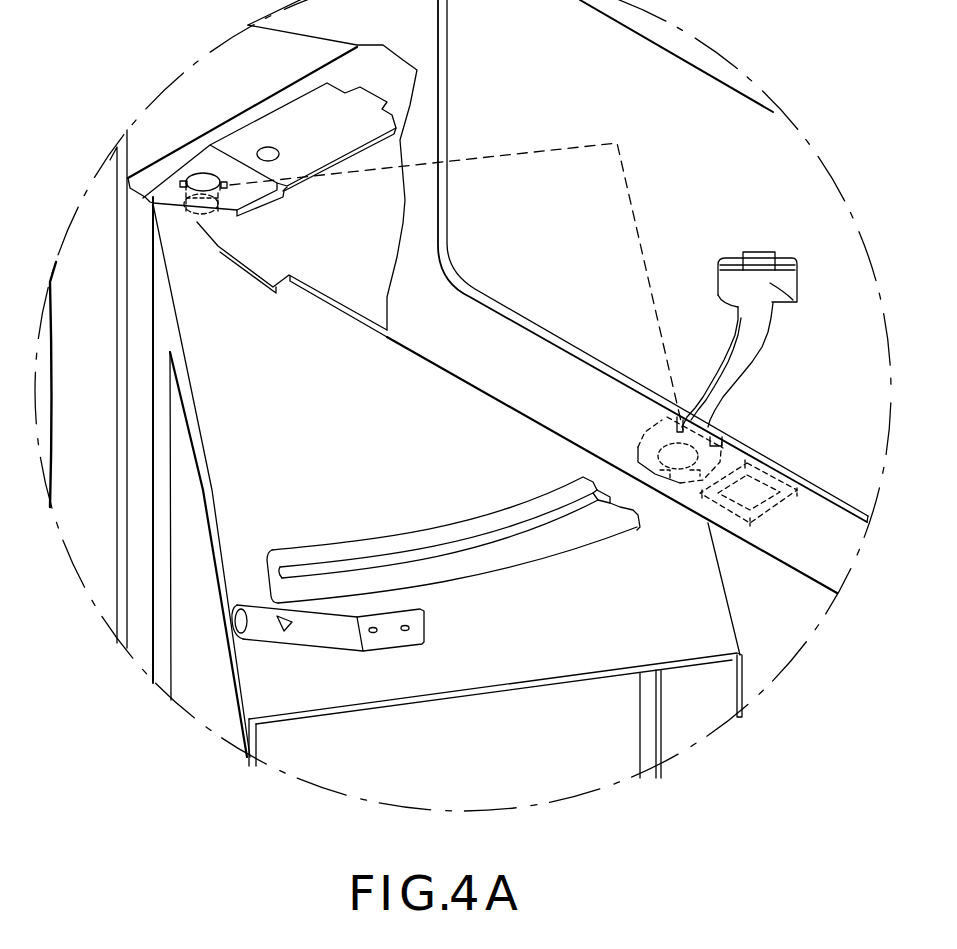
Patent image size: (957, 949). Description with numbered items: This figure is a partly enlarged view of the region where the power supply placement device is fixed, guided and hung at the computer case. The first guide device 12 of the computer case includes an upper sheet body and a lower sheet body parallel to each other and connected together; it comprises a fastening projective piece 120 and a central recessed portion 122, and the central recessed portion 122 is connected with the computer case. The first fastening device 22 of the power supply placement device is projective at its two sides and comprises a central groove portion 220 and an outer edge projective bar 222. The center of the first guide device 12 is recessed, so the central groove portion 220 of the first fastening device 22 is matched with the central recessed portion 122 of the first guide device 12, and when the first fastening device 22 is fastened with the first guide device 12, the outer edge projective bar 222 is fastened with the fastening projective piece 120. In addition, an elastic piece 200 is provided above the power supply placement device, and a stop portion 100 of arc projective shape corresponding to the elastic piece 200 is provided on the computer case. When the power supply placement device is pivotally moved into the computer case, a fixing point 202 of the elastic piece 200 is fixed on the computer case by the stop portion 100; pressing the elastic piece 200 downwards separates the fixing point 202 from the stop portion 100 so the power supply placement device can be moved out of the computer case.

The stop portion 100 is at (768, 498).
The first guide device 12 is at (700, 384).
The fastening projective piece 120 is at (770, 288).
The central recessed portion 122 is at (737, 362).
The first fastening device 22 is at (487, 527).
The outer edge projective bar 222 is at (487, 523).
The central groove portion 220 is at (587, 512).
The elastic piece 200 is at (393, 687).
The fixing point 202 is at (286, 609).